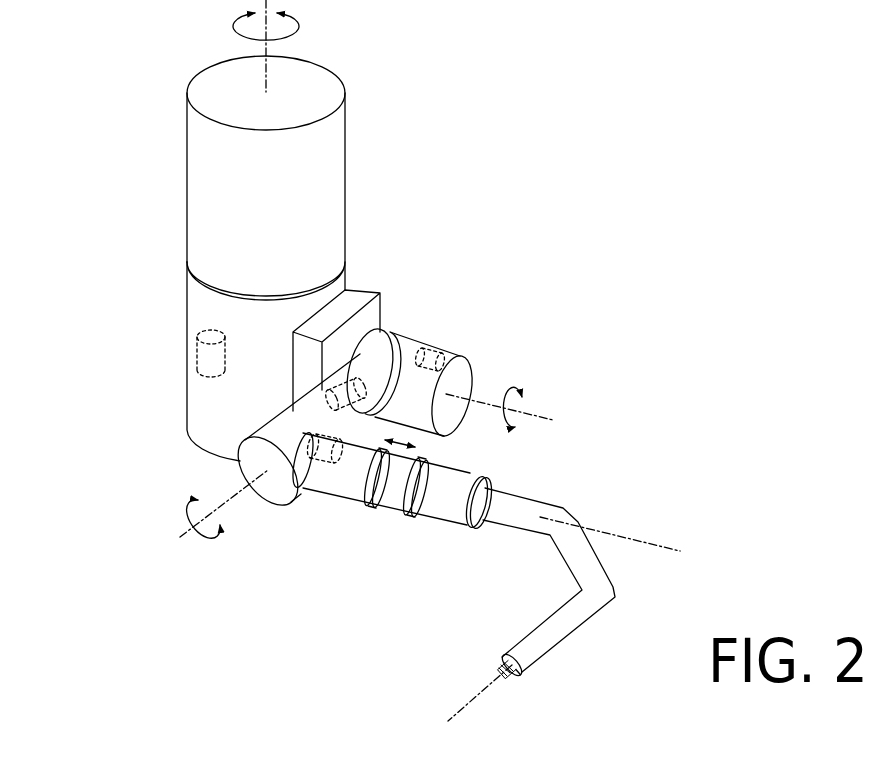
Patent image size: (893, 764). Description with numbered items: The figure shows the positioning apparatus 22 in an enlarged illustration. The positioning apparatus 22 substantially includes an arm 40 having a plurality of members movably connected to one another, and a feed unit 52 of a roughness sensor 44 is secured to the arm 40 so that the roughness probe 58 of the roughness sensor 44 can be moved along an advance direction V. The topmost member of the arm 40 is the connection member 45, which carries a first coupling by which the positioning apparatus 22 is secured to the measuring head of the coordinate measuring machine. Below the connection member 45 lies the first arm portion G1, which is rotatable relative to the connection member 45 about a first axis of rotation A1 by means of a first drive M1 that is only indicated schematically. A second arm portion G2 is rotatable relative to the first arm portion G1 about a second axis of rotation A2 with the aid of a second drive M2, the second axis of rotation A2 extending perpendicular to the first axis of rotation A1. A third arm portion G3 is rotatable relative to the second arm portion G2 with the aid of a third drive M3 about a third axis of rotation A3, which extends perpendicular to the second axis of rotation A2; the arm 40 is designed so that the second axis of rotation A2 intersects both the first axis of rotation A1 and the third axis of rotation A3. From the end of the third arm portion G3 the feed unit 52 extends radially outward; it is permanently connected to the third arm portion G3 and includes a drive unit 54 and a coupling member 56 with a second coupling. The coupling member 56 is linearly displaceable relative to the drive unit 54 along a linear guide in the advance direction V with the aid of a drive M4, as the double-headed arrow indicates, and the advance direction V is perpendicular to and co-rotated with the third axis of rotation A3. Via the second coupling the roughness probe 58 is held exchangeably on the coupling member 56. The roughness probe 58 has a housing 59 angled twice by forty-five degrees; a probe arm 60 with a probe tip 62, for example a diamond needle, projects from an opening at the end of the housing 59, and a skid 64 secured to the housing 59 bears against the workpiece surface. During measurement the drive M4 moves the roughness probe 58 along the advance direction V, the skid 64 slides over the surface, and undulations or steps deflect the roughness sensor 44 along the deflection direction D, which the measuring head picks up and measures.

The positioning apparatus 22 is at (512, 215).
The arm 40 is at (165, 219).
The roughness sensor 44 is at (385, 588).
The connection member 45 is at (337, 143).
The feed unit 52 is at (338, 509).
The drive unit 54 is at (333, 488).
The coupling member 56 is at (390, 513).
The roughness probe 58 is at (467, 538).
The housing 59 is at (548, 502).
The probe arm 60 is at (499, 667).
The probe tip 62 is at (498, 673).
The skid 64 is at (519, 676).
The first axis of rotation A1 is at (273, 49).
The second axis of rotation A2 is at (543, 418).
The third axis of rotation A3 is at (232, 500).
The deflection direction D is at (468, 698).
The first arm portion G1 is at (198, 294).
The second arm portion G2 is at (397, 343).
The third arm portion G3 is at (242, 473).
The first drive M1 is at (197, 361).
The second drive M2 is at (437, 349).
The third drive M3 is at (380, 346).
The drive M4 is at (308, 440).
The advance direction V is at (617, 535).